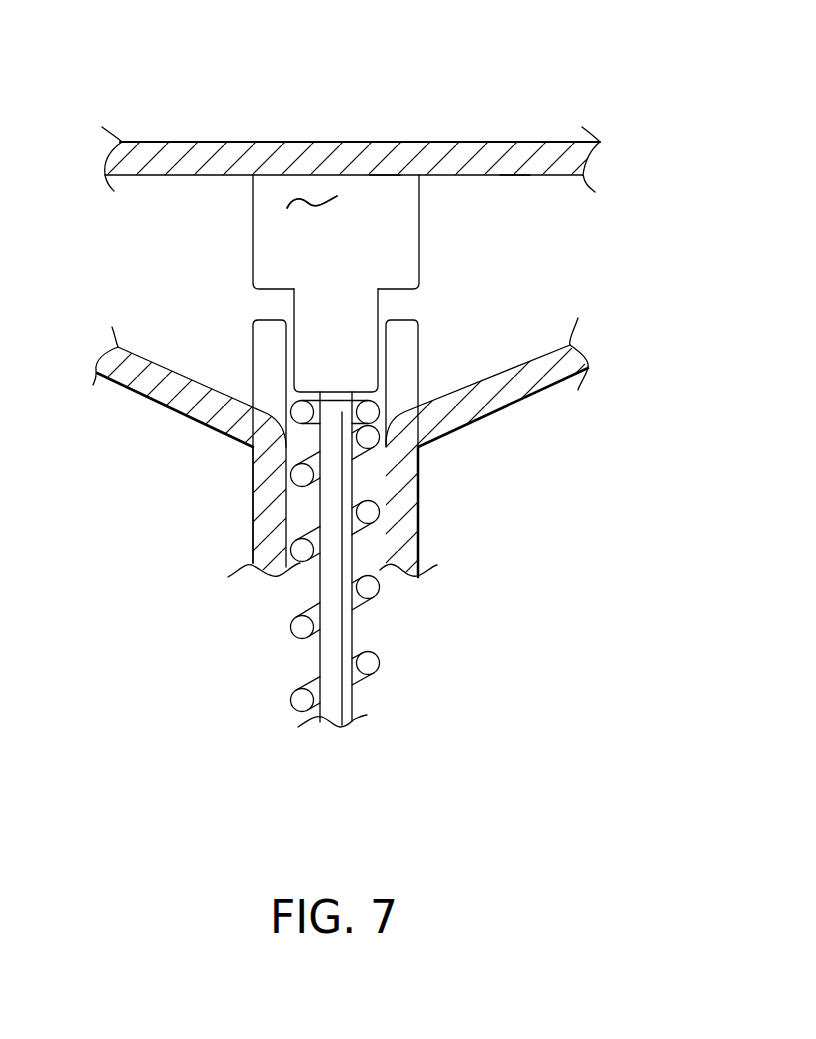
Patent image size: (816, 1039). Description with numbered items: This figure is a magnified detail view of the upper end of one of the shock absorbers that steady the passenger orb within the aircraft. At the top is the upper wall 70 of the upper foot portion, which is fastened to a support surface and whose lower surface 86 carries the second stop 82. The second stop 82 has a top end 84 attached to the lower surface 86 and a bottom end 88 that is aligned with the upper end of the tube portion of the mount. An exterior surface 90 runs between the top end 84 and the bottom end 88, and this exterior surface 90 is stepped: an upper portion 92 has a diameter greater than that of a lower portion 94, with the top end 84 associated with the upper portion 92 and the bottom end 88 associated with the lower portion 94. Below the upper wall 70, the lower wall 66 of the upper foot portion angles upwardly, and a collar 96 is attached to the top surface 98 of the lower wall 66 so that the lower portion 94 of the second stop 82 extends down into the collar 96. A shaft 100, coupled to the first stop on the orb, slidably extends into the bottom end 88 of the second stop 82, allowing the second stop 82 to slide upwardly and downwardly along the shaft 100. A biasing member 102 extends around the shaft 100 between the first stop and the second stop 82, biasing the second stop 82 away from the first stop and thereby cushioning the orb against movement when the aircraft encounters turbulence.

The lower wall 66 is at (503, 408).
The upper wall 70 is at (473, 142).
The second stop 82 is at (218, 195).
The top end 84 is at (387, 175).
The lower surface 86 is at (515, 176).
The bottom end 88 is at (402, 554).
The exterior surface 90 is at (321, 197).
The upper portion 92 is at (232, 237).
The lower portion 94 is at (272, 308).
The collar 96 is at (253, 368).
The top surface 98 is at (487, 378).
The shaft 100 is at (320, 657).
The biasing member 102 is at (382, 594).